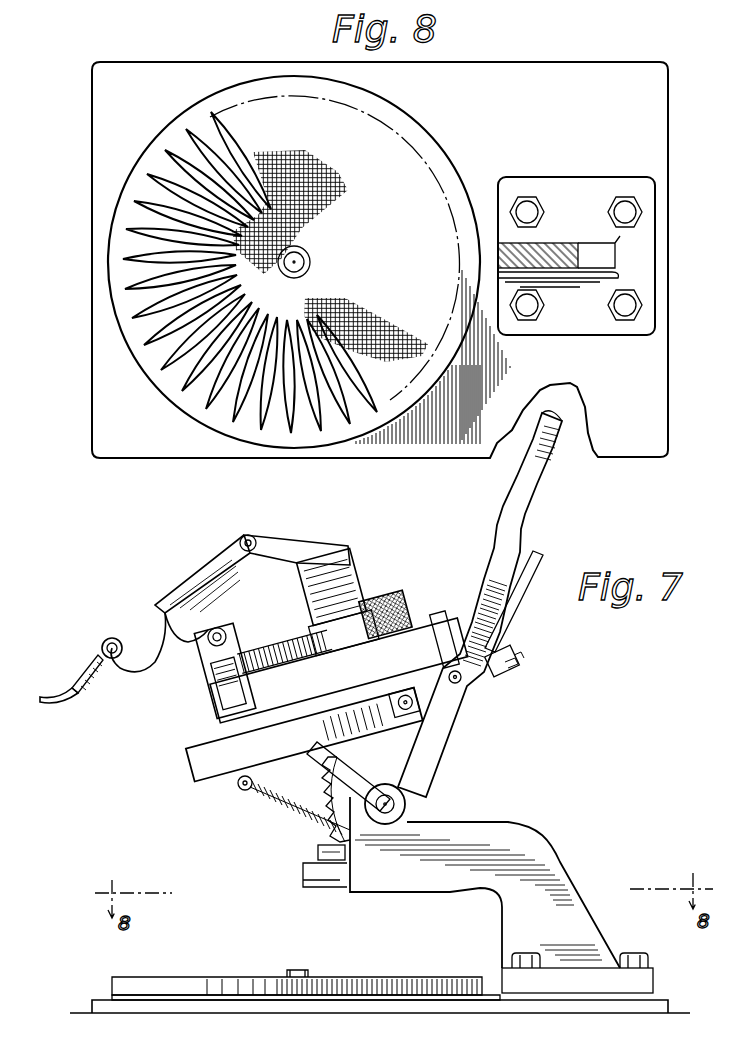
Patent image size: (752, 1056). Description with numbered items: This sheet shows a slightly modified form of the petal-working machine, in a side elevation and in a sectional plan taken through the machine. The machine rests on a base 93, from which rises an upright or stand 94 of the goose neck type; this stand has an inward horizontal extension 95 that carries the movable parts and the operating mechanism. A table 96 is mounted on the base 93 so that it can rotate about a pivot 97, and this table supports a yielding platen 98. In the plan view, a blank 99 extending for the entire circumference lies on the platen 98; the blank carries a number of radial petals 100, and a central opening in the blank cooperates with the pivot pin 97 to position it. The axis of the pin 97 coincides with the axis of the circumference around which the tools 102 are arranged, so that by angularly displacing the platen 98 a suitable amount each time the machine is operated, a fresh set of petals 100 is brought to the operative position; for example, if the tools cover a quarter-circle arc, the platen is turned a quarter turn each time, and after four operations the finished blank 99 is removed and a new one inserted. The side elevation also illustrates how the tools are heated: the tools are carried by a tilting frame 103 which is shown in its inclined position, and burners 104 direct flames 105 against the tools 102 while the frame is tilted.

In FIG. 7, the base 93 is at (275, 1013).
In FIG. 8, the upright or stand 94 is at (605, 253).
In FIG. 7, the upright or stand 94 is at (548, 855).
In FIG. 7, the inward horizontal extension 95 is at (452, 825).
In FIG. 7, the table 96 is at (185, 998).
In FIG. 7, the pivot 97 is at (297, 970).
In FIG. 7, the yielding platen 98 is at (124, 980).
In FIG. 8, the blank 99 is at (160, 330).
In FIG. 8, the radial petals 100 is at (143, 285).
In FIG. 7, the tools 102 is at (118, 640).
In FIG. 7, the tilting frame 103 is at (203, 745).
In FIG. 7, the burners 104 is at (78, 700).
In FIG. 7, the flames 105 is at (95, 680).